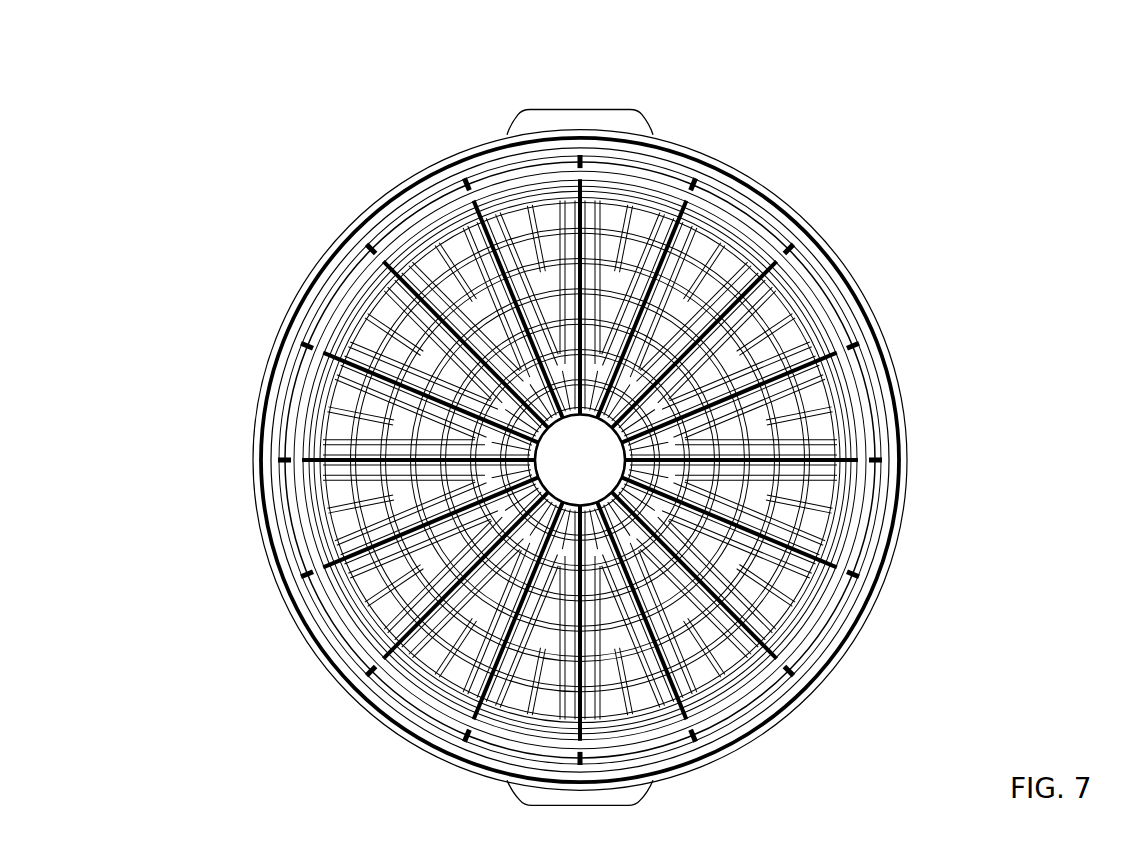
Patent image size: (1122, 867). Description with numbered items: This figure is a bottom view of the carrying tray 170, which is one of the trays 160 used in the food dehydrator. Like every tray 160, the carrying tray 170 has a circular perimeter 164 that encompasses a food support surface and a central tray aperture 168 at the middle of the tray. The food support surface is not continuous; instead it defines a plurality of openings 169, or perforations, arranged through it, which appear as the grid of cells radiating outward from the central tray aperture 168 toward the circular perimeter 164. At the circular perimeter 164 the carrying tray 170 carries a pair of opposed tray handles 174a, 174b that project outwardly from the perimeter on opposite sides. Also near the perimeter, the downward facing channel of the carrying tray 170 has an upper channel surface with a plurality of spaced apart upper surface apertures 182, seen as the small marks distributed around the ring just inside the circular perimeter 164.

The tray 160 is at (622, 460).
The circular perimeter 164 is at (590, 460).
The central tray aperture 168 is at (627, 460).
The openings 169 is at (568, 510).
The carrying tray 170 is at (522, 460).
The tray handle 174a is at (580, 93).
The tray handle 174b is at (565, 821).
The upper surface apertures 182 is at (617, 452).